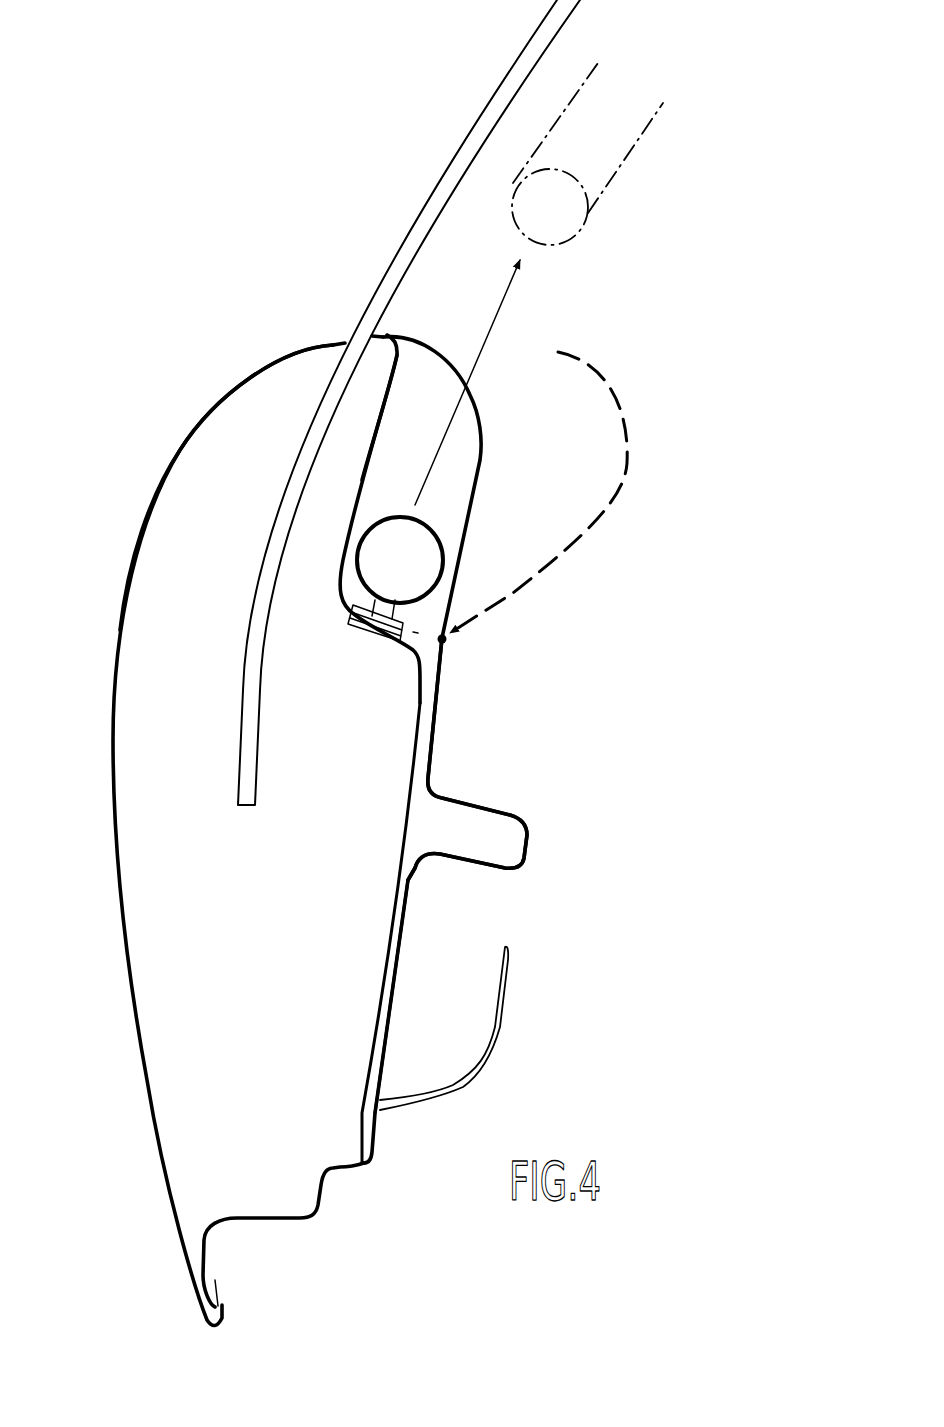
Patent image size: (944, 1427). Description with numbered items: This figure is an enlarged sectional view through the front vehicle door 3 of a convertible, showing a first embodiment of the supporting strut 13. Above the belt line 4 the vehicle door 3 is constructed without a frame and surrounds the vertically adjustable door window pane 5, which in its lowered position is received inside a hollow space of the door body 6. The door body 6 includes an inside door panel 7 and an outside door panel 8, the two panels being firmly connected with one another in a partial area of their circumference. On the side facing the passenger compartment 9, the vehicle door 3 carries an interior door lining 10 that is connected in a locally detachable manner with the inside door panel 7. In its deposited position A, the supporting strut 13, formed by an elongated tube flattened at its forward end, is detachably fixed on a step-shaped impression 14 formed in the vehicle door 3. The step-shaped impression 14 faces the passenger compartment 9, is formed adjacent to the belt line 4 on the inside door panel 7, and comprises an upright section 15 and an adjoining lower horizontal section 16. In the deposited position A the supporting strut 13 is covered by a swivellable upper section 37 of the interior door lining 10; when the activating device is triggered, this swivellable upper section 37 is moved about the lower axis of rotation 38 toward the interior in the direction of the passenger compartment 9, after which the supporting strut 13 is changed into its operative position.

The vehicle door 3 is at (123, 954).
The belt line 4 is at (336, 328).
The door window pane 5 is at (435, 193).
The door body 6 is at (299, 1226).
The inside door panel 7 is at (402, 921).
The outside door panel 8 is at (125, 590).
The passenger compartment 9 is at (622, 722).
The interior door lining 10 is at (450, 745).
The supporting strut 13 is at (447, 557).
The step-shaped impression 14 is at (392, 412).
The upright section 15 is at (352, 490).
The lower horizontal section 16 is at (372, 638).
The swivellable upper section 37 is at (600, 517).
The lower axis of rotation 38 is at (449, 641).
The deposited position A is at (437, 512).